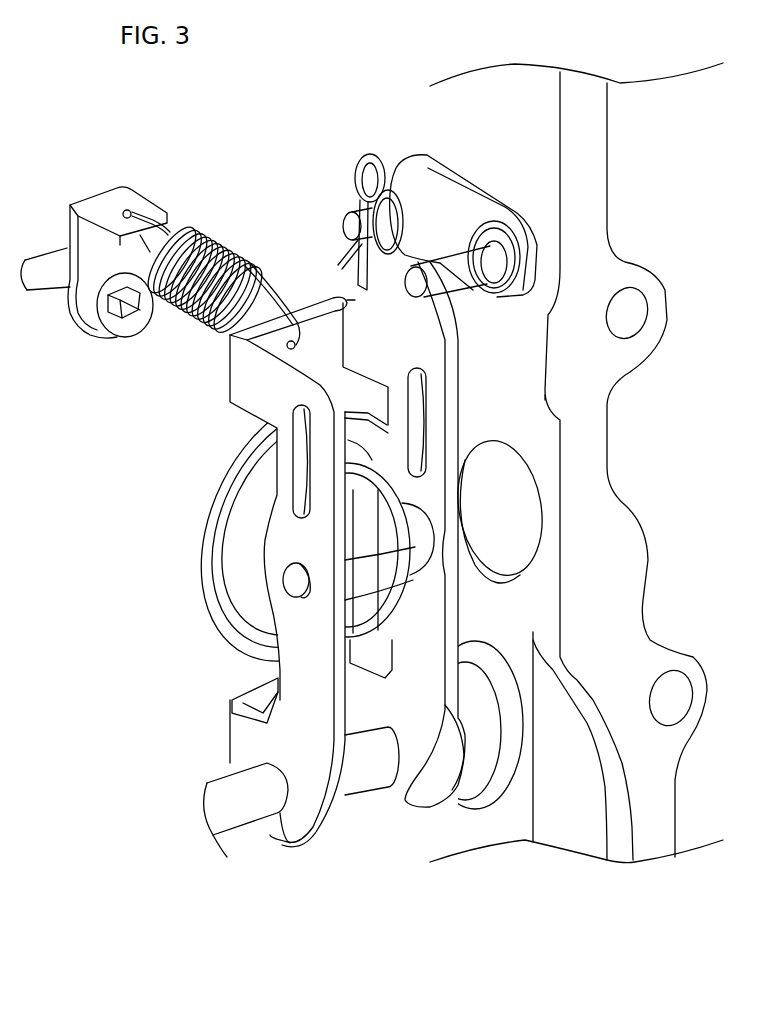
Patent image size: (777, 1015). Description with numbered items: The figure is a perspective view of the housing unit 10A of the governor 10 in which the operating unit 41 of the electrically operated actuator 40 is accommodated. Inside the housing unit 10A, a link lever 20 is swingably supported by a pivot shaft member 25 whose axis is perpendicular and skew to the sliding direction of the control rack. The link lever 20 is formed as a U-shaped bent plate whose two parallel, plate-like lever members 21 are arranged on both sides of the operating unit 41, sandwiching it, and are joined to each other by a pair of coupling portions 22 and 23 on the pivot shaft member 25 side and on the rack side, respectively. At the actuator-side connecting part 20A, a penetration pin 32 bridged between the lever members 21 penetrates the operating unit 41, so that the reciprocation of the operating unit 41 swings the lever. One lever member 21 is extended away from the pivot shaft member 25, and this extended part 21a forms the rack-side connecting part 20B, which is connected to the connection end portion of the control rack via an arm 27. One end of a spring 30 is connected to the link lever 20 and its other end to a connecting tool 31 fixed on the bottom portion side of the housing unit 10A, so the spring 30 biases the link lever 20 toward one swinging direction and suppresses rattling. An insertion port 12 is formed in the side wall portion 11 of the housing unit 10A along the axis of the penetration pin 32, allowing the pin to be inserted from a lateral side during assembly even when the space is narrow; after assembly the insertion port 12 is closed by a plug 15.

The governor 10 is at (608, 188).
The housing unit 10A is at (360, 830).
The side wall portion 11 is at (537, 432).
The insertion port 12 is at (487, 563).
The plug 15 is at (510, 492).
The link lever 20 is at (227, 402).
The actuator-side connecting part 20A is at (257, 540).
The rack-side connecting part 20B is at (440, 157).
The lever members 21 is at (308, 677).
The extended part 21a is at (390, 185).
The coupling portion 22 is at (328, 318).
The coupling portion 23 is at (250, 688).
The pivot shaft member 25 is at (240, 820).
The arm 27 is at (483, 197).
The spring 30 is at (223, 232).
The connecting tool 31 is at (68, 227).
The penetration pin 32 is at (290, 585).
The actuator 40 is at (400, 480).
The operating unit 41 is at (373, 500).